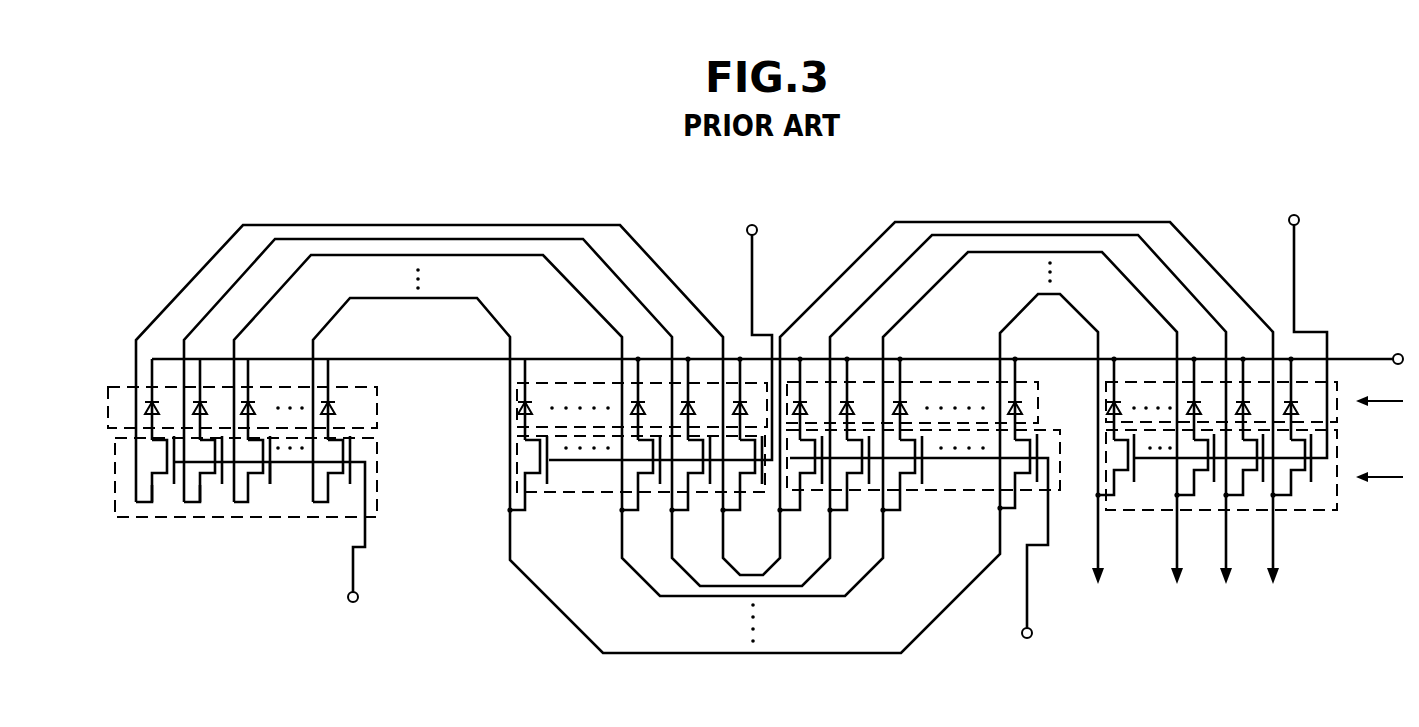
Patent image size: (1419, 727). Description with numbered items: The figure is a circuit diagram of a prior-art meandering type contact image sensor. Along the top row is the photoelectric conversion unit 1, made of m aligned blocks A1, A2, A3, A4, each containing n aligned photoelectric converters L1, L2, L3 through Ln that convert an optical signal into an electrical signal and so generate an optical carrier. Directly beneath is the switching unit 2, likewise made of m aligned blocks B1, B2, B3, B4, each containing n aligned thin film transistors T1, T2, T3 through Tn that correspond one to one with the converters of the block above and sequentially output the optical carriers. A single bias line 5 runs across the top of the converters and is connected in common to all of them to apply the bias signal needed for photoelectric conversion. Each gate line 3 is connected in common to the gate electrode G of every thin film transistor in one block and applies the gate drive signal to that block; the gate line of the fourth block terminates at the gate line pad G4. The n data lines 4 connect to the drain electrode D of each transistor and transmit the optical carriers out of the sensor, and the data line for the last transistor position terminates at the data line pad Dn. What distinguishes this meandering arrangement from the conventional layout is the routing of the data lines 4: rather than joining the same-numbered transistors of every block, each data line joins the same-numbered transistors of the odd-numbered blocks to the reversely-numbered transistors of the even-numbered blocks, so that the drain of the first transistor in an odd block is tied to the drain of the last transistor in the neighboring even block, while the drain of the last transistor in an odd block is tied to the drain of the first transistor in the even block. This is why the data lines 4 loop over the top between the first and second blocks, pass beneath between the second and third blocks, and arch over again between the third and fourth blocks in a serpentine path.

The photoelectric conversion unit 1 is at (1386, 402).
The switching unit 2 is at (1386, 478).
The gate line 3 is at (352, 574).
The data line 4 is at (365, 225).
The bias line 5 is at (1366, 357).
The first block of photoelectric conversion unit A1 is at (108, 392).
The second block of photoelectric conversion unit A2 is at (572, 387).
The third block of photoelectric conversion unit A3 is at (955, 387).
The fourth block of photoelectric conversion unit A4 is at (1152, 387).
The first block of switching unit B1 is at (120, 456).
The second block of switching unit B2 is at (570, 486).
The third block of switching unit B3 is at (952, 488).
The fourth block of switching unit B4 is at (1146, 496).
The first photoelectric converter L1 is at (145, 410).
The second photoelectric converter L2 is at (210, 408).
The third photoelectric converter L3 is at (254, 408).
The n-th photoelectric converter Ln is at (336, 410).
The n-th data line pad Dn is at (428, 300).
The first thin film transistor T1 is at (170, 452).
The second thin film transistor T2 is at (192, 504).
The third thin film transistor T3 is at (270, 480).
The n-th thin film transistor Tn is at (331, 500).
The drain electrode D is at (148, 506).
The gate electrode G is at (272, 476).
The fourth gate line pad G4 is at (1294, 262).